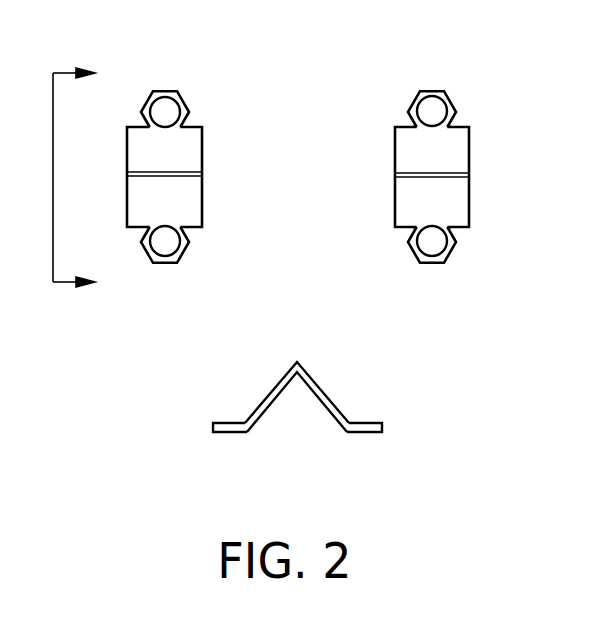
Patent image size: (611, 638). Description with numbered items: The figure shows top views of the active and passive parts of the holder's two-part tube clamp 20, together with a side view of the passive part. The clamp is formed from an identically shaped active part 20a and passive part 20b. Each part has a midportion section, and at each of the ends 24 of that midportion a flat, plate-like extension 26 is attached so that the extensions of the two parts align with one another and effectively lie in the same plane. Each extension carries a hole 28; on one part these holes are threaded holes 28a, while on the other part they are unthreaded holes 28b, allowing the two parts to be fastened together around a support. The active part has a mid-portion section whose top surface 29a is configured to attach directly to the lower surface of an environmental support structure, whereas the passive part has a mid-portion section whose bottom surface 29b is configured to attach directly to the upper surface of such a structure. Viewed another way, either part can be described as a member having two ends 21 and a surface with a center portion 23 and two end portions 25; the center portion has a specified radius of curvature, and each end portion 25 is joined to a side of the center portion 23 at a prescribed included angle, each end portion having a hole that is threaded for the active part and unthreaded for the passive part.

The tube clamp 20 is at (322, 391).
The active part 20a is at (183, 152).
The passive part 20b is at (458, 213).
The ends 21 is at (420, 97).
The center portion 23 is at (469, 155).
The ends of midportion section 24 is at (140, 128).
The end portions 25 is at (413, 123).
The plate-like extension 26 is at (182, 253).
The hole 28 is at (437, 240).
The threaded holes 28a is at (163, 105).
The unthreaded holes 28b is at (458, 117).
The top surface 29a is at (203, 163).
The bottom surface 29b is at (470, 176).